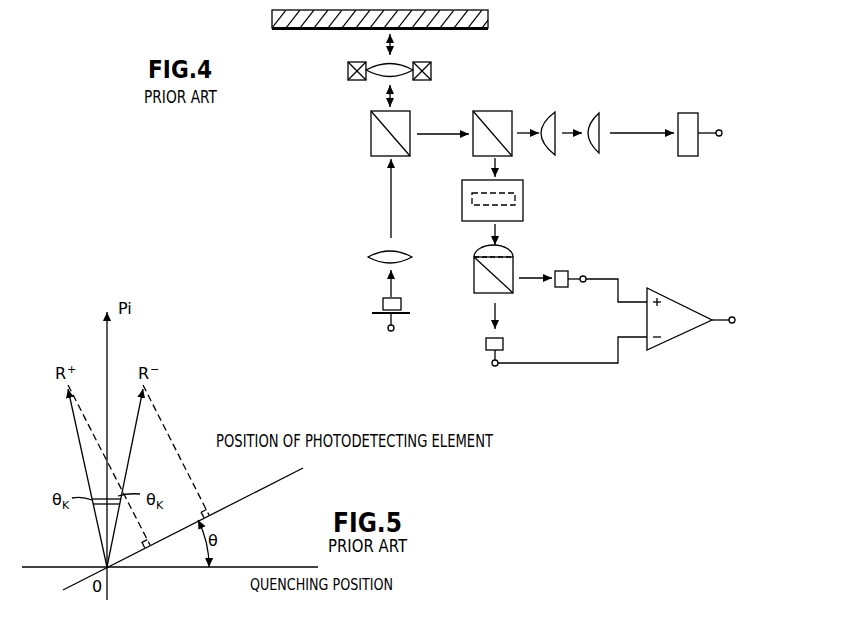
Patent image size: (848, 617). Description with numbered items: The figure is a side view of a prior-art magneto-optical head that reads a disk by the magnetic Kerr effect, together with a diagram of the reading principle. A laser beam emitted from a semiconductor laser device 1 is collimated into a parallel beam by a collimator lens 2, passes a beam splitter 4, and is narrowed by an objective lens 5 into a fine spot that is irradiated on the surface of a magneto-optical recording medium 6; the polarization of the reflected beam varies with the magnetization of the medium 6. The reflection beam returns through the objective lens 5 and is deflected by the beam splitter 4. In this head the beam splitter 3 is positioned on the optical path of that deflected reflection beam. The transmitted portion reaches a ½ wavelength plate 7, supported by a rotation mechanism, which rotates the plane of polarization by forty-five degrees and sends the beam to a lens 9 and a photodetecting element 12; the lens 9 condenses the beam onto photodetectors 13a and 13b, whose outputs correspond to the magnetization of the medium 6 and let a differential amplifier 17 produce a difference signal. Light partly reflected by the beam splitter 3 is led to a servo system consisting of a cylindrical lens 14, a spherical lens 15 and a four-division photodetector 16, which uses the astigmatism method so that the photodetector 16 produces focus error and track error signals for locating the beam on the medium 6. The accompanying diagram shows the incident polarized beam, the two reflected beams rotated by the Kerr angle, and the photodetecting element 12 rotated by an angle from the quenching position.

The semiconductor laser device 1 is at (383, 302).
The collimator lens 2 is at (368, 256).
The beam splitter 3 is at (497, 111).
The beam splitter 4 is at (370, 138).
The objective lens 5 is at (348, 70).
The magneto-optical recording medium 6 is at (488, 20).
The ½ wavelength plate 7 is at (513, 205).
The lens 9 is at (507, 246).
The photodetecting element 12 is at (474, 278).
The photodetector 13a is at (563, 267).
The photodetector 13b is at (505, 342).
The cylindrical lens 14 is at (553, 110).
The spherical lens 15 is at (592, 116).
The four-division photodetector 16 is at (681, 112).
The differential amplifier 17 is at (689, 308).